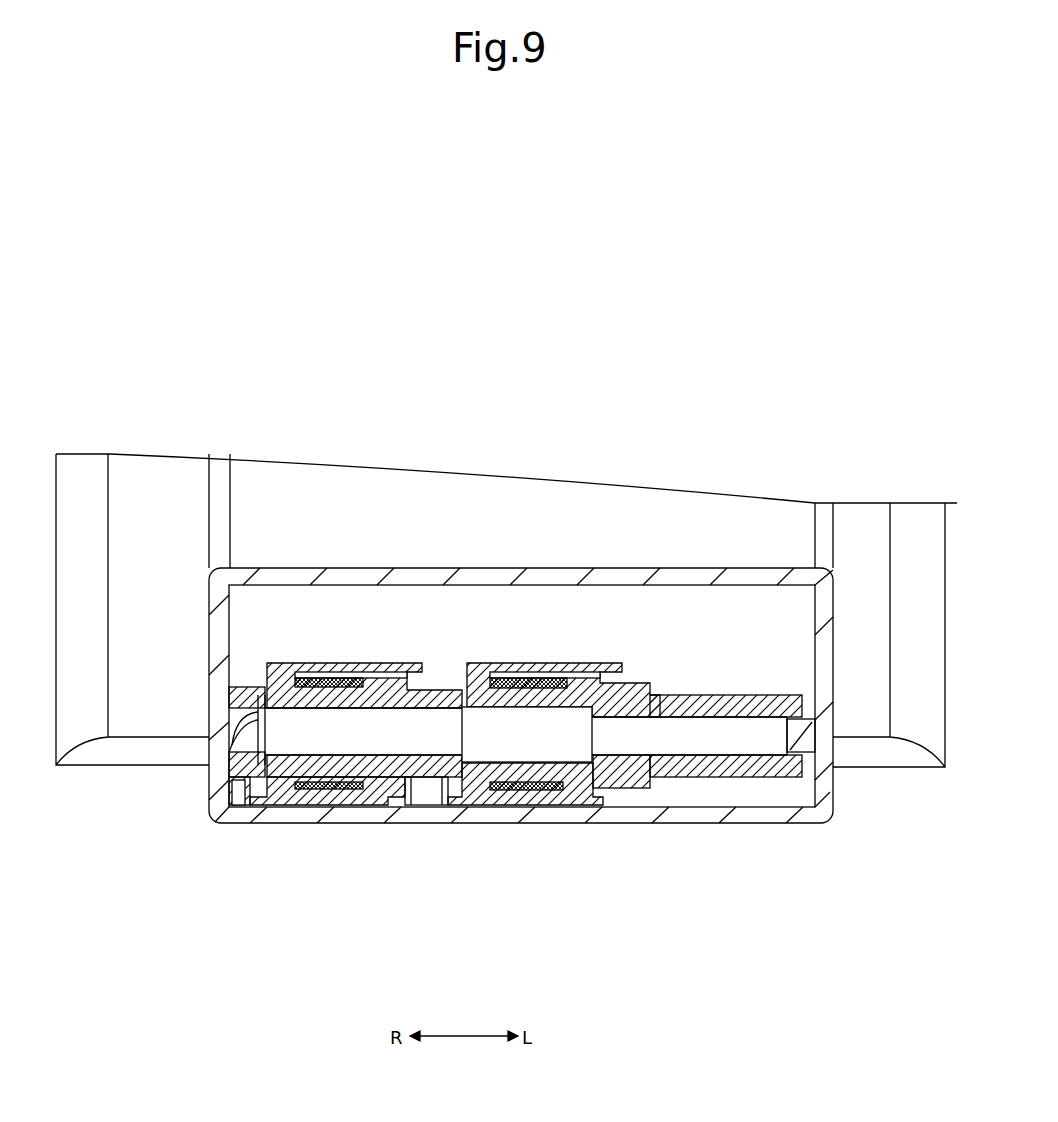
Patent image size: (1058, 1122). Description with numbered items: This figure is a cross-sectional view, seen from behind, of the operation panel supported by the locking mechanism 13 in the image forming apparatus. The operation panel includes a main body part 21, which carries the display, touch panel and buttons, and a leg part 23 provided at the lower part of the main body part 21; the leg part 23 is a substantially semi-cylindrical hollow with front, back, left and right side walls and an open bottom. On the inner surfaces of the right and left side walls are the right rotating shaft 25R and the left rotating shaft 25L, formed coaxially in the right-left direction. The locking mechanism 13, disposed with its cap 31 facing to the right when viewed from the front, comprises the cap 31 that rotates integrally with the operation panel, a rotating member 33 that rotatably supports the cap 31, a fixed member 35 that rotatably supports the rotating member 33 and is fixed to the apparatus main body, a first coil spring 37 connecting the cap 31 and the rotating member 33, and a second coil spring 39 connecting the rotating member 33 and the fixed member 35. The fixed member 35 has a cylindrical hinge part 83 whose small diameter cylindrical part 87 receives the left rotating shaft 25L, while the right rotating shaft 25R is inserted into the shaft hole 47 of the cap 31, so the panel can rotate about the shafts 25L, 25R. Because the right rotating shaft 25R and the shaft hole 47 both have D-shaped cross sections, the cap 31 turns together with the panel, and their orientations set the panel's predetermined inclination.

The locking mechanism 13 is at (435, 805).
The main body part 21 is at (312, 490).
The leg part 23 is at (480, 580).
The right rotating shaft 25R is at (238, 748).
The left rotating shaft 25L is at (808, 745).
The cap 31 is at (238, 779).
The rotating member 33 is at (420, 781).
The fixed member 35 is at (627, 791).
The first coil spring 37 is at (316, 798).
The second coil spring 39 is at (517, 790).
The shaft hole 47 is at (265, 798).
The hinge part 83 is at (645, 838).
The small diameter cylindrical part 87 is at (735, 768).